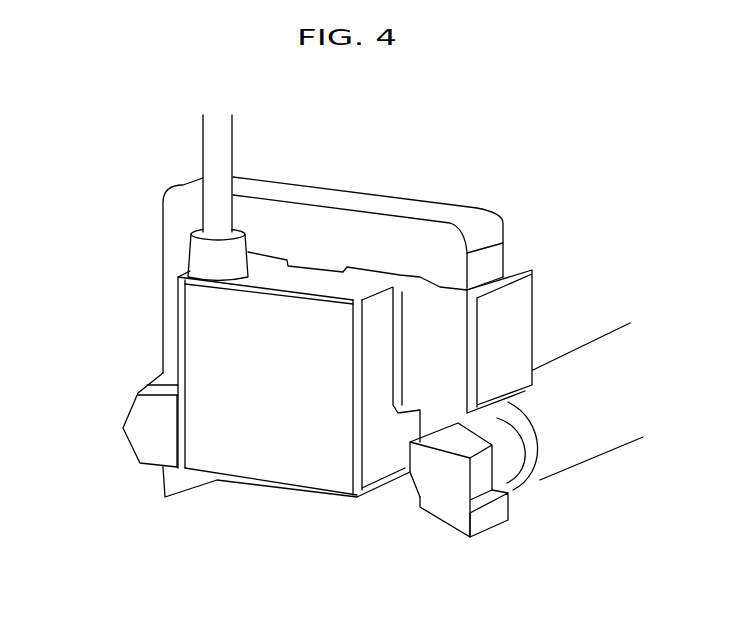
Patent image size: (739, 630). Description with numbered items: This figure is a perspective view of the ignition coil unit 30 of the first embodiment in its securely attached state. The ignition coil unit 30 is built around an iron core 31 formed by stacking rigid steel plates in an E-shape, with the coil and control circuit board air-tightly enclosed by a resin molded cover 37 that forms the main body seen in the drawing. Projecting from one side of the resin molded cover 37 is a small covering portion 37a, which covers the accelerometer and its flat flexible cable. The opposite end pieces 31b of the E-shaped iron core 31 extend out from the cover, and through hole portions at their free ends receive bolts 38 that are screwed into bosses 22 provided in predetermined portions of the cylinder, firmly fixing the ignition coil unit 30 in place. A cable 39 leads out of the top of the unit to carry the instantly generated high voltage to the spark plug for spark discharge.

The ignition coil unit 30 is at (423, 200).
The iron core 31 is at (297, 190).
The end pieces 31b is at (167, 253).
The resin molded cover 37 is at (203, 310).
The small covering portion 37a is at (513, 297).
The bolts 38 is at (138, 425).
The cable 39 is at (200, 162).
The bosses 22 is at (590, 443).